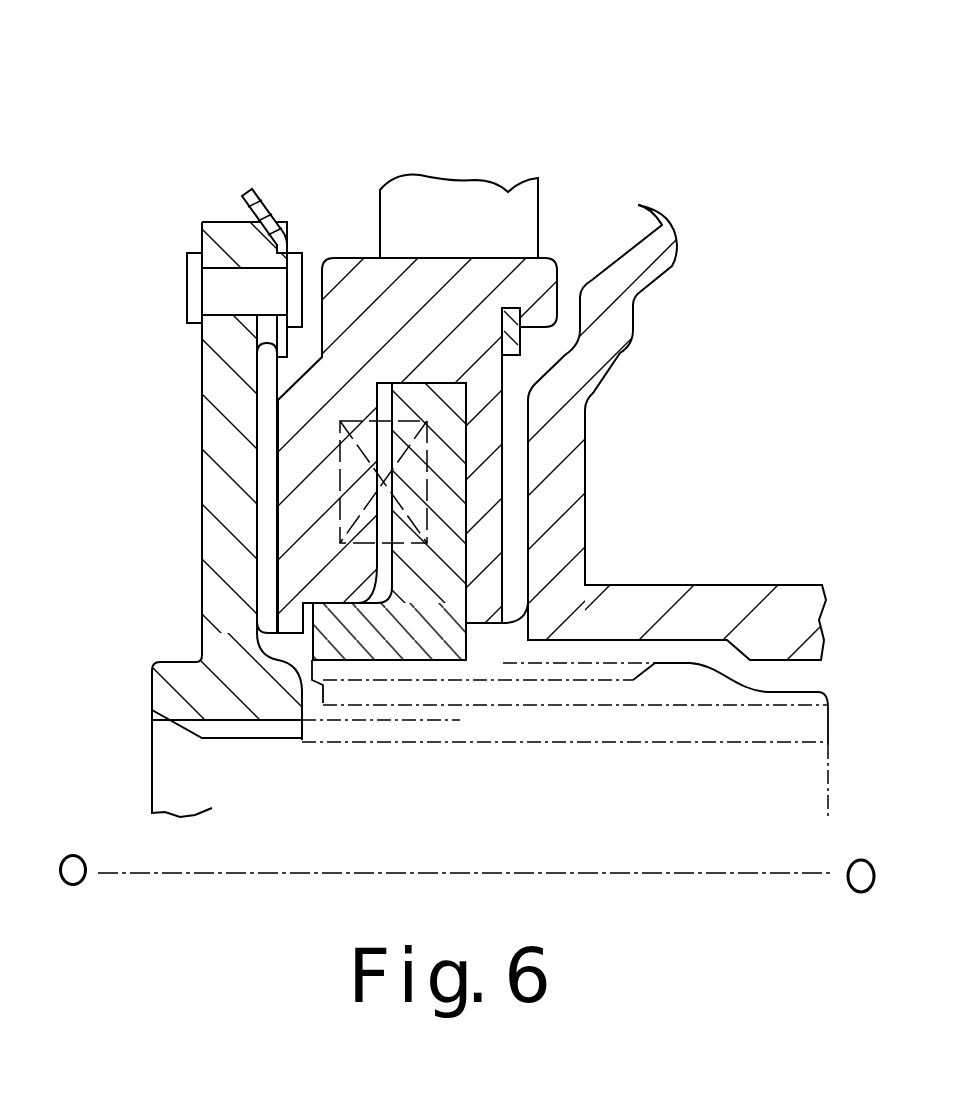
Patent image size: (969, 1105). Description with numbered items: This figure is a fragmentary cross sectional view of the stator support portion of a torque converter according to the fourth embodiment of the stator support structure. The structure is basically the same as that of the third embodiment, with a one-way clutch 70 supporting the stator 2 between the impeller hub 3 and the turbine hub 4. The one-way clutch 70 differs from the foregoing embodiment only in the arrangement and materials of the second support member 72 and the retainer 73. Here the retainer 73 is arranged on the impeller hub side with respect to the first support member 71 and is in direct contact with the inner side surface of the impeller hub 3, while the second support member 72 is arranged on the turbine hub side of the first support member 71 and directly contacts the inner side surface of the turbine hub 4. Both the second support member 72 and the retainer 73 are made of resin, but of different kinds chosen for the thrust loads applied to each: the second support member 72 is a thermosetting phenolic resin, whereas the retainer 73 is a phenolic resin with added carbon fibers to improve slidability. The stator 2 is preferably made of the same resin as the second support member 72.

The stator 2 is at (509, 190).
The impeller hub 3 is at (628, 332).
The turbine hub 4 is at (201, 221).
The one-way clutch 70 is at (302, 187).
The first support member 71 is at (472, 647).
The second support member 72 is at (265, 389).
The retainer 73 is at (482, 403).